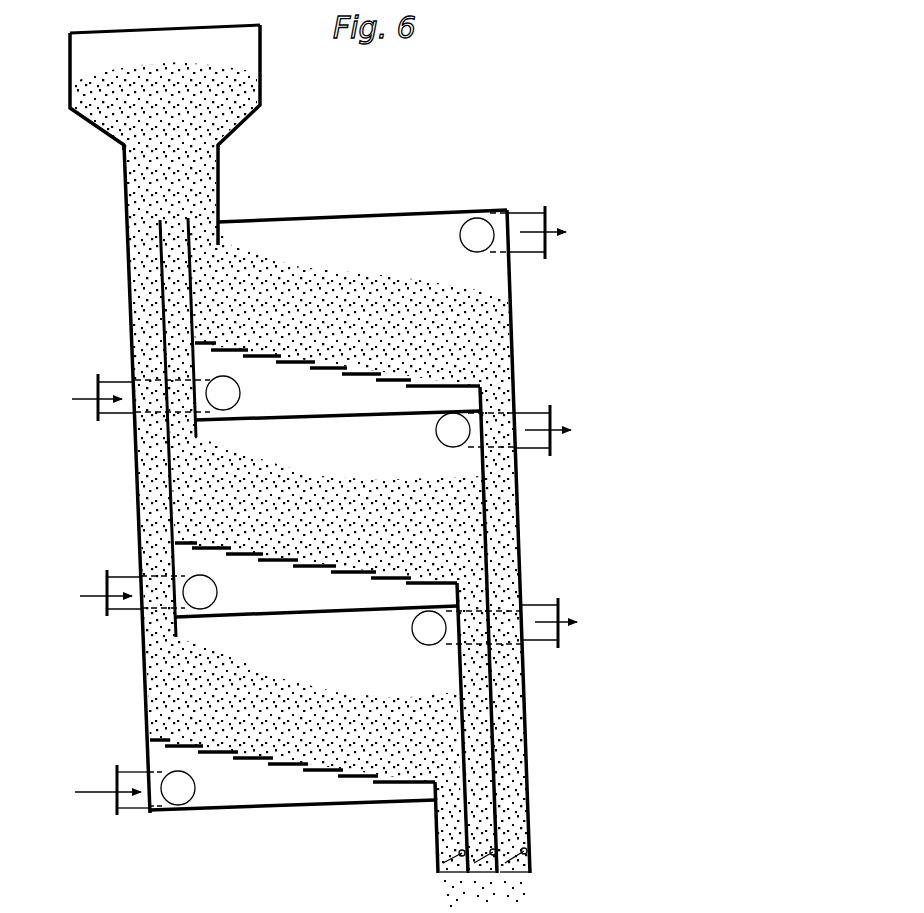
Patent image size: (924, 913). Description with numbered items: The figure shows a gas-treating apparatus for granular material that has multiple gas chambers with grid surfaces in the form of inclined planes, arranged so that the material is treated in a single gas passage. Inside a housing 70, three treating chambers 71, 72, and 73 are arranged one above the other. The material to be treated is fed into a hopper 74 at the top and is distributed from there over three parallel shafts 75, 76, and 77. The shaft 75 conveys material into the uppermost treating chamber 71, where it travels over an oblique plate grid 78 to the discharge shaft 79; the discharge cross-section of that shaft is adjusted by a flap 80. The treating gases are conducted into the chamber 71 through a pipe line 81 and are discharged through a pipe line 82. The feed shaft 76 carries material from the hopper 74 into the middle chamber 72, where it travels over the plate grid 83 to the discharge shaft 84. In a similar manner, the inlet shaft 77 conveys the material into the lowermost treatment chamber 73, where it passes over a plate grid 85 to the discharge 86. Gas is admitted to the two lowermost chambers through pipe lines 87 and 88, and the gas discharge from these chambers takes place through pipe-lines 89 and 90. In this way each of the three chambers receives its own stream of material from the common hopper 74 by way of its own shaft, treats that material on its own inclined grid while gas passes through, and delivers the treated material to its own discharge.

The housing 70 is at (512, 320).
The uppermost treating chamber 71 is at (470, 345).
The treating chamber 72 is at (425, 540).
The lowermost treatment chamber 73 is at (430, 740).
The hopper 74 is at (130, 125).
The shaft 75 is at (205, 222).
The feed shaft 76 is at (165, 285).
The inlet shaft 77 is at (140, 465).
The oblique plate grid 78 is at (390, 372).
The discharge shaft 79 is at (500, 490).
The flap 80 is at (512, 851).
The pipe line 81 is at (107, 408).
The pipe line 82 is at (537, 224).
The plate grid 83 is at (372, 572).
The discharge shaft 84 is at (478, 768).
The plate grid 85 is at (218, 757).
The discharge 86 is at (447, 823).
The pipe line 87 is at (117, 784).
The pipe line 88 is at (107, 610).
The pipe-line 89 is at (553, 631).
The pipe-line 90 is at (545, 424).